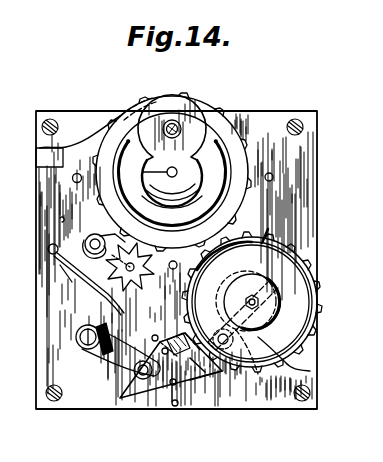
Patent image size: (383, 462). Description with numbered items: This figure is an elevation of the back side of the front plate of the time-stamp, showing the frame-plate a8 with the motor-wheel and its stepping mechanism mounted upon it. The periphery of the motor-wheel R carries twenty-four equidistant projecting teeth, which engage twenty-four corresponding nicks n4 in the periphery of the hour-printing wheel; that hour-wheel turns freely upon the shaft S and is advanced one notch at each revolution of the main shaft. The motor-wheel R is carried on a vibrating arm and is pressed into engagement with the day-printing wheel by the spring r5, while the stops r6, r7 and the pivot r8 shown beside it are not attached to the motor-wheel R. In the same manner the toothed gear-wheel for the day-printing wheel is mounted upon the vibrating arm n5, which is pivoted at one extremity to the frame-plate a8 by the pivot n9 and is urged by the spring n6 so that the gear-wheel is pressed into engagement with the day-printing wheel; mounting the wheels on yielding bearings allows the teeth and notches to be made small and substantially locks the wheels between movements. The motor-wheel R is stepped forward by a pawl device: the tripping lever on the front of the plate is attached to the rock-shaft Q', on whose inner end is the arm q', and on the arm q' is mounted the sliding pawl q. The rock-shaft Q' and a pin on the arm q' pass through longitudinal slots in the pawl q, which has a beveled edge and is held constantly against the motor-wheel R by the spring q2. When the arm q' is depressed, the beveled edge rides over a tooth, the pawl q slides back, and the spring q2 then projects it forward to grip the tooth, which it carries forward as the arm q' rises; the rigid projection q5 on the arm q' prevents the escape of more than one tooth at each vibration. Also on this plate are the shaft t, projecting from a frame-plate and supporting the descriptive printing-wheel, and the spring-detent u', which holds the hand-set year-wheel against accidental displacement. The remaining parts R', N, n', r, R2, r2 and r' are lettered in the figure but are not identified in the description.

The shaft t is at (168, 121).
The motor-wheel R is at (172, 172).
The inner ring of ratchet wheel R' is at (195, 180).
The shaft S is at (147, 165).
The spring-detent u' is at (96, 132).
The frame-plate a8 is at (54, 213).
The pivot n9 is at (86, 243).
The vibrating arm n5 is at (107, 225).
The rod N is at (86, 279).
The spring n6 is at (62, 277).
The nicks n4 is at (90, 270).
The star wheel n' is at (130, 267).
The toothed wheel r is at (265, 302).
The stop r7 is at (277, 321).
The drum R2 is at (268, 317).
The stop r6 is at (229, 277).
The pin r2 is at (268, 229).
The lever r' is at (243, 327).
The pivot r8 is at (224, 341).
The spring r5 is at (310, 371).
The rock-shaft Q' is at (118, 376).
The arm q' is at (171, 381).
The sliding pawl q is at (169, 336).
The spring q2 is at (192, 386).
The rigid projection q5 is at (212, 374).